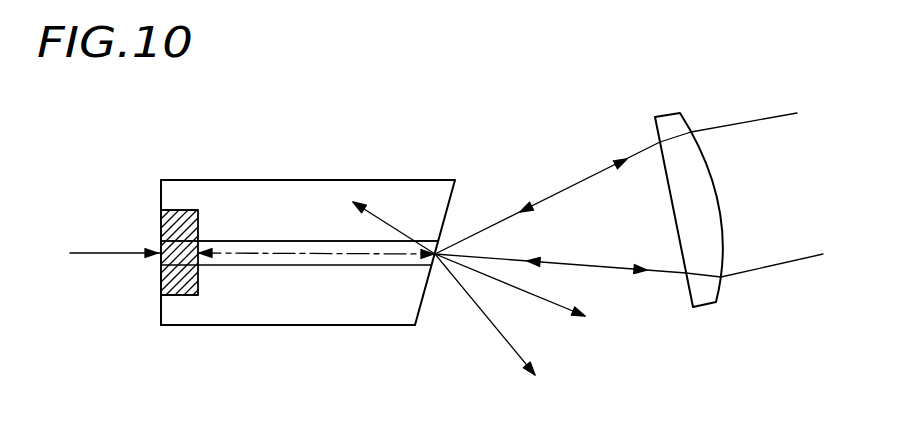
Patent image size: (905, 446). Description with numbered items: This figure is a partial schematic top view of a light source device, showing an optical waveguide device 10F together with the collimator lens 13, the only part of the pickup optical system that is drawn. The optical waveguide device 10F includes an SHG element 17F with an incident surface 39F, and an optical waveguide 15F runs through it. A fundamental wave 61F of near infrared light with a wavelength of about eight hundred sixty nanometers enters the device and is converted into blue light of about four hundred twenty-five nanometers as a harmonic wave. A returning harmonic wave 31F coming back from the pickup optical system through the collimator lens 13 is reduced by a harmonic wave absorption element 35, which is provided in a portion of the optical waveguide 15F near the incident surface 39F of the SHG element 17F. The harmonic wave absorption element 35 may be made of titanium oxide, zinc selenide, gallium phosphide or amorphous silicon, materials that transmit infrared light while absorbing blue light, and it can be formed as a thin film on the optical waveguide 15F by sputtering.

The optical waveguide device 10F is at (372, 170).
The collimator lens 13 is at (708, 307).
The optical waveguide 15F is at (307, 266).
The SHG element 17F is at (391, 327).
The returning harmonic wave 31F is at (229, 249).
The harmonic wave absorption element 35 is at (176, 296).
The incident surface 39F is at (161, 313).
The fundamental wave 61F is at (93, 252).